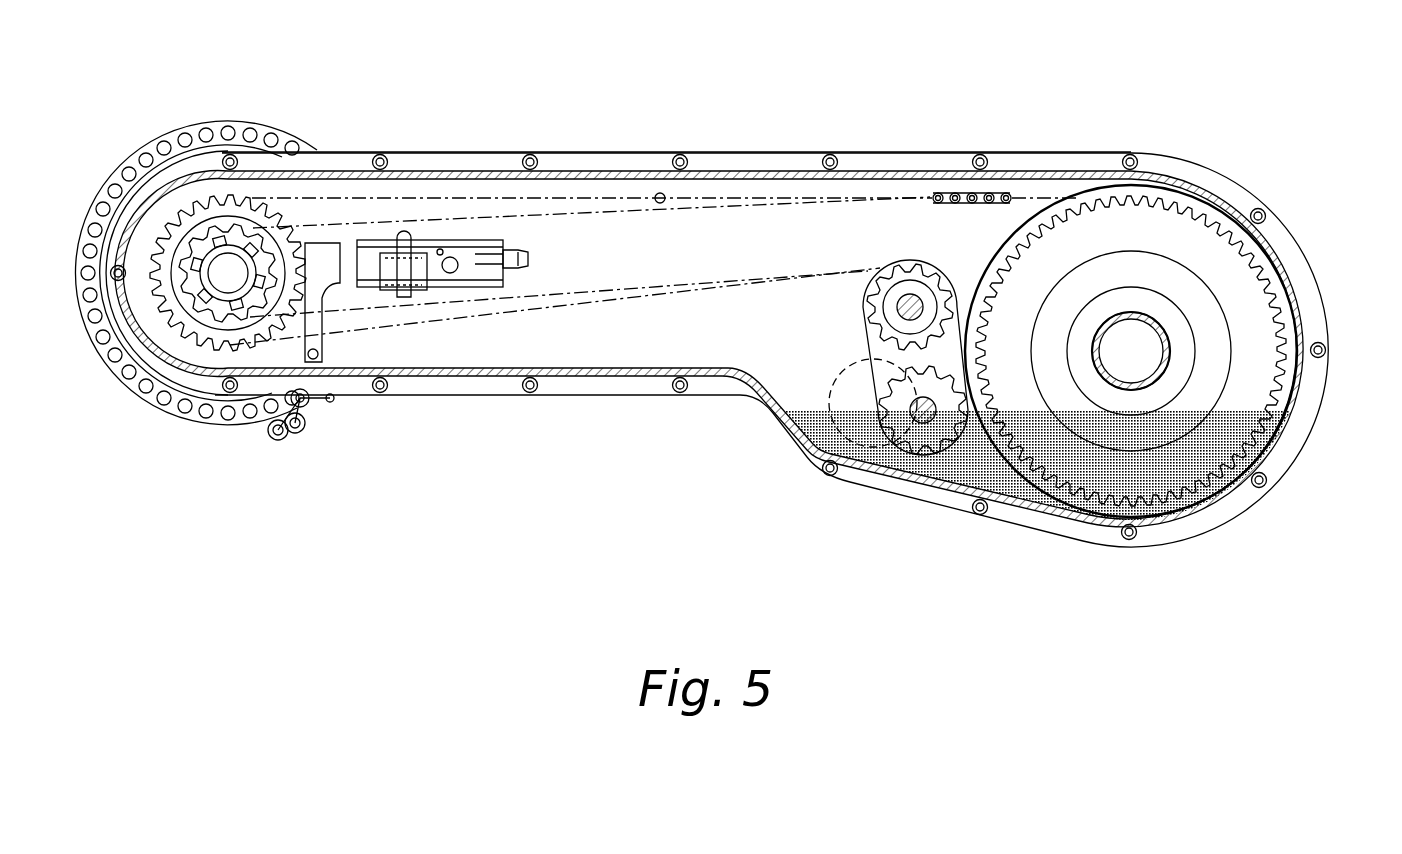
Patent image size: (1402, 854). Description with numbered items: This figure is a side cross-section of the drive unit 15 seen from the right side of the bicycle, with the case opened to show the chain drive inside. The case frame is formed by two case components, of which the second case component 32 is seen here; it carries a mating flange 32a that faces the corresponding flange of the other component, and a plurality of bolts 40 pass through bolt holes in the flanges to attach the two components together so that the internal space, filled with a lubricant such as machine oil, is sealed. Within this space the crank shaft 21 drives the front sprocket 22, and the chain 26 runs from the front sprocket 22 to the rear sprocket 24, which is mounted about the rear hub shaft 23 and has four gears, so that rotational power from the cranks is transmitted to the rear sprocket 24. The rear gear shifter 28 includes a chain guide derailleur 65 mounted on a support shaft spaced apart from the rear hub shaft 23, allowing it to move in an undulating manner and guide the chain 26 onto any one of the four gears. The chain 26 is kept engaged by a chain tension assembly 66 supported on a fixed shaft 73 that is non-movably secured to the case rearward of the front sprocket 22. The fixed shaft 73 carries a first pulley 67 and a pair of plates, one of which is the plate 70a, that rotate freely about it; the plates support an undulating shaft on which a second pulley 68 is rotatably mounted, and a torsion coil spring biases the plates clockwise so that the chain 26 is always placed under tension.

The drive unit 15 is at (620, 462).
The crank shaft 21 is at (1157, 322).
The front sprocket 22 is at (1253, 325).
The rear hub shaft 23 is at (226, 252).
The rear sprocket 24 is at (270, 207).
The chain 26 is at (1003, 197).
The rear gear shifter 28 is at (515, 231).
The second case component 32 is at (709, 276).
The mating flange 32a is at (1180, 173).
The bolts 40 is at (1125, 150).
The chain guide derailleur 65 is at (460, 247).
The chain tension assembly 66 is at (868, 305).
The first pulley 67 is at (915, 292).
The second pulley 68 is at (933, 457).
The plate 70a is at (870, 348).
The fixed shaft 73 is at (870, 270).